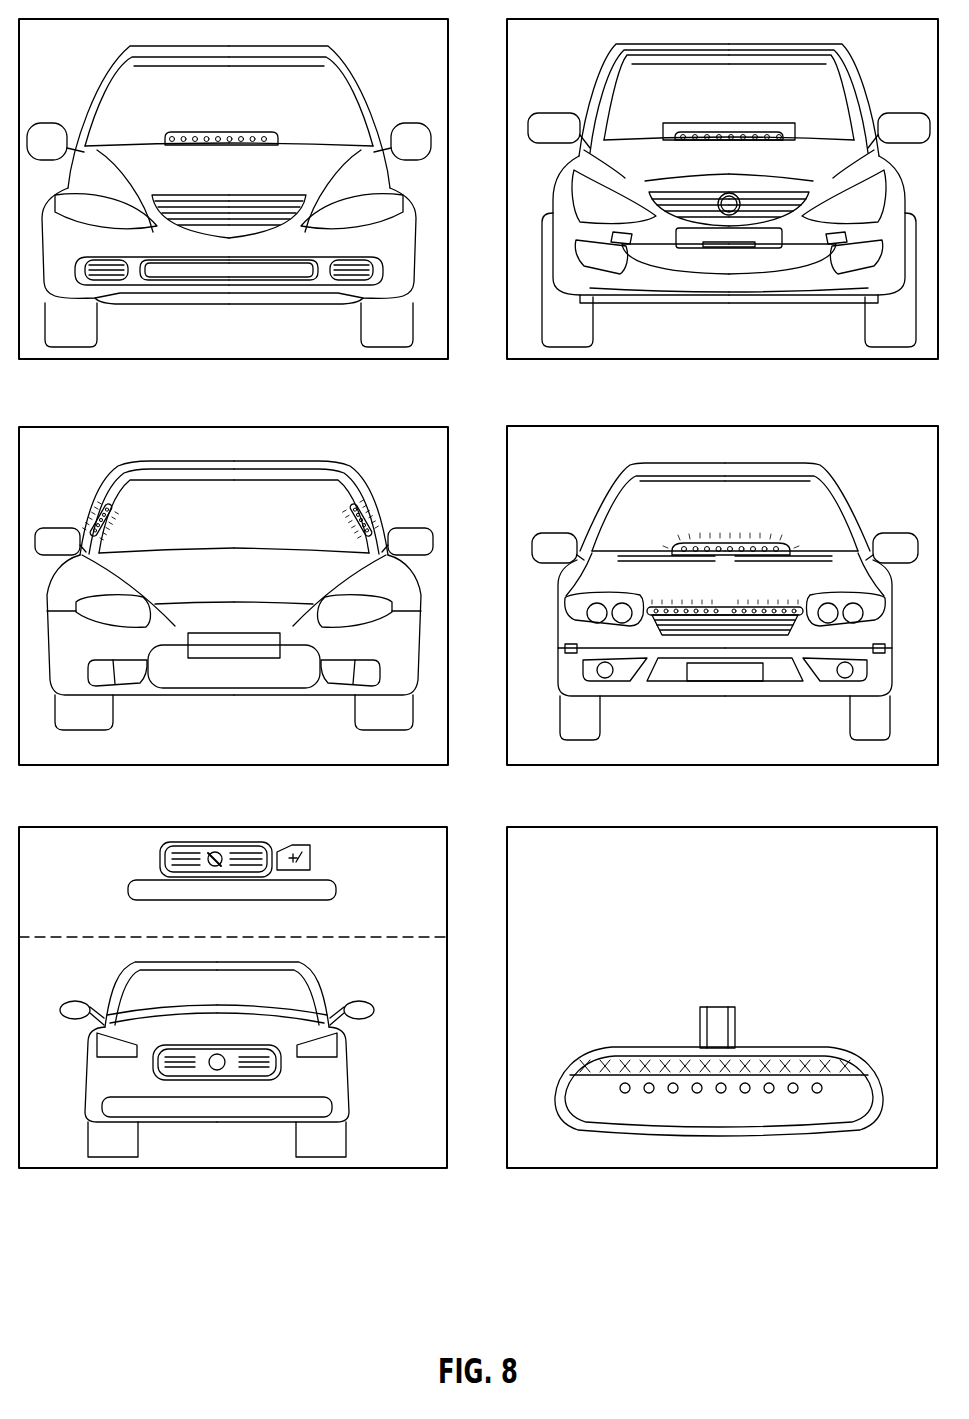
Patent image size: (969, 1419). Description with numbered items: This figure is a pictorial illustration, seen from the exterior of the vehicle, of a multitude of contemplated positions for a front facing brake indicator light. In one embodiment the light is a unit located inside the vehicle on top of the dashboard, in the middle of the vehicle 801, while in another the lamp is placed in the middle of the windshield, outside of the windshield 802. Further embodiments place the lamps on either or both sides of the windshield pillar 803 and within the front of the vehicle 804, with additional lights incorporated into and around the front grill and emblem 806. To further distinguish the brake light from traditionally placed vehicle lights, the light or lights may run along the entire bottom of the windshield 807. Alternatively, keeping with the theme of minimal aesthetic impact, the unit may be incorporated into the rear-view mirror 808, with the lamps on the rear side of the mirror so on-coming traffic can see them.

The front facing light unit on top of the dashboard 801 is at (248, 137).
The lamp in the middle of the windshield 802 is at (753, 135).
The sensor arrays at A-pillars 803 is at (355, 506).
The sensor arrays in grille and hood 804 is at (765, 603).
The lights around the front grill and emblem 806 is at (243, 842).
The lights along the bottom of the windshield 807 is at (263, 1008).
The rear-view mirror 808 is at (731, 1071).